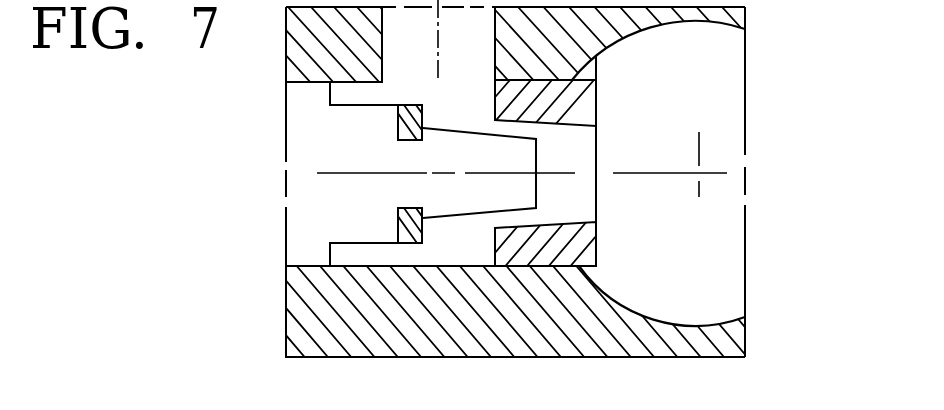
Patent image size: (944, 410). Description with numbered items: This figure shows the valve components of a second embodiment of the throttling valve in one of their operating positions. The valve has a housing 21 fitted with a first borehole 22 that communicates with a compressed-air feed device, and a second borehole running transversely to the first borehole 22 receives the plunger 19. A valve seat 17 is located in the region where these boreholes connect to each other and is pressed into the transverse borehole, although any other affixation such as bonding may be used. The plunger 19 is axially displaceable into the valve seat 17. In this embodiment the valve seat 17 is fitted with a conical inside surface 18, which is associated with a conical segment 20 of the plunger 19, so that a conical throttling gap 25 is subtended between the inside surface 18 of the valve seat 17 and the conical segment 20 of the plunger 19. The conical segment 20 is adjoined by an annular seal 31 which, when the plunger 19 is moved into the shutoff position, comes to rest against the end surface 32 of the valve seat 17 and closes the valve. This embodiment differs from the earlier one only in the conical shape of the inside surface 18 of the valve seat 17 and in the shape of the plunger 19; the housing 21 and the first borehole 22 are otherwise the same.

The valve seat 17 is at (570, 100).
The inside surface of the valve seat 18 is at (553, 127).
The plunger 19 is at (352, 198).
The conical segment of the plunger 20 is at (453, 128).
The housing 21 is at (313, 303).
The first borehole 22 is at (723, 247).
The throttling gap 25 is at (505, 218).
The annular seal 31 is at (398, 123).
The end surface of the valve seat 32 is at (493, 103).